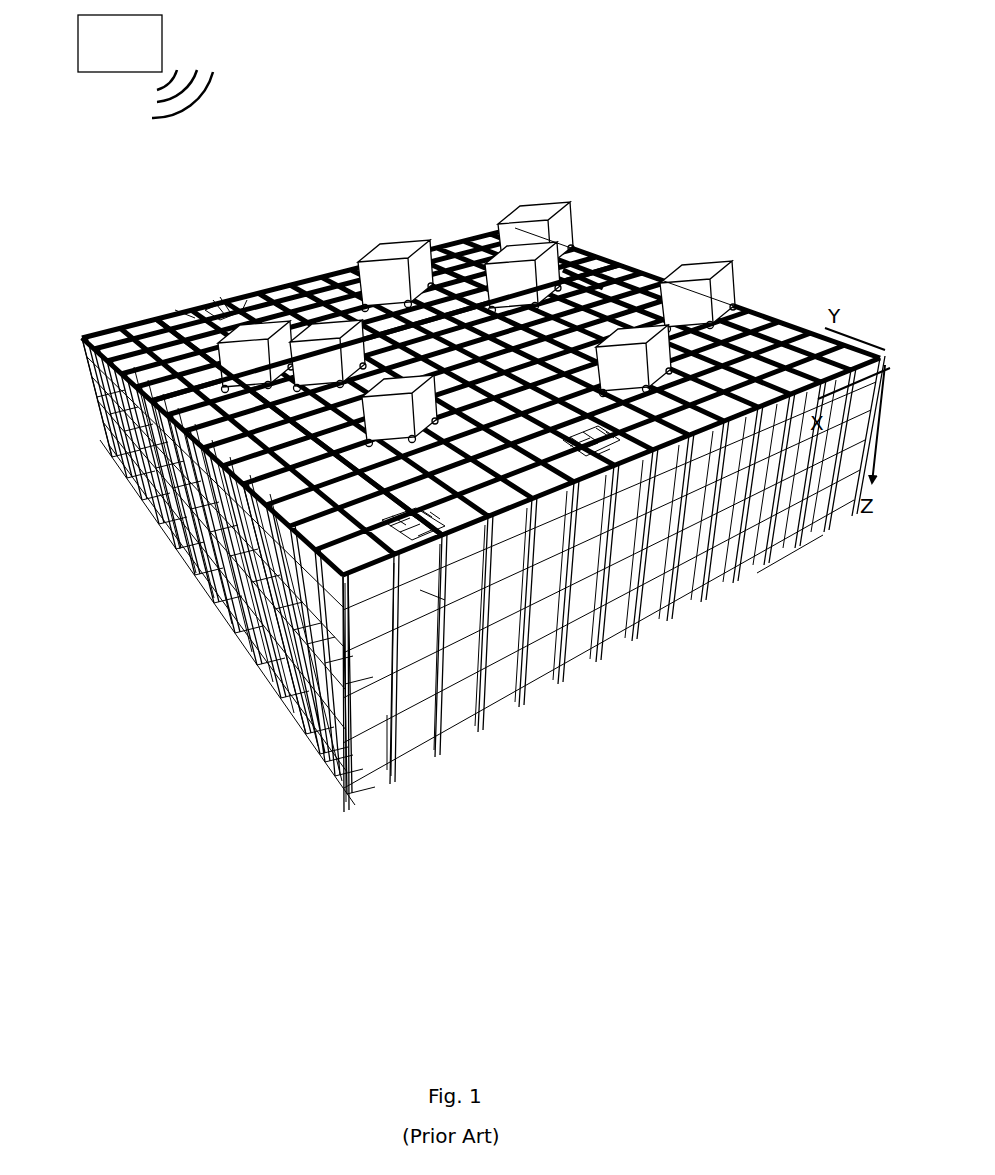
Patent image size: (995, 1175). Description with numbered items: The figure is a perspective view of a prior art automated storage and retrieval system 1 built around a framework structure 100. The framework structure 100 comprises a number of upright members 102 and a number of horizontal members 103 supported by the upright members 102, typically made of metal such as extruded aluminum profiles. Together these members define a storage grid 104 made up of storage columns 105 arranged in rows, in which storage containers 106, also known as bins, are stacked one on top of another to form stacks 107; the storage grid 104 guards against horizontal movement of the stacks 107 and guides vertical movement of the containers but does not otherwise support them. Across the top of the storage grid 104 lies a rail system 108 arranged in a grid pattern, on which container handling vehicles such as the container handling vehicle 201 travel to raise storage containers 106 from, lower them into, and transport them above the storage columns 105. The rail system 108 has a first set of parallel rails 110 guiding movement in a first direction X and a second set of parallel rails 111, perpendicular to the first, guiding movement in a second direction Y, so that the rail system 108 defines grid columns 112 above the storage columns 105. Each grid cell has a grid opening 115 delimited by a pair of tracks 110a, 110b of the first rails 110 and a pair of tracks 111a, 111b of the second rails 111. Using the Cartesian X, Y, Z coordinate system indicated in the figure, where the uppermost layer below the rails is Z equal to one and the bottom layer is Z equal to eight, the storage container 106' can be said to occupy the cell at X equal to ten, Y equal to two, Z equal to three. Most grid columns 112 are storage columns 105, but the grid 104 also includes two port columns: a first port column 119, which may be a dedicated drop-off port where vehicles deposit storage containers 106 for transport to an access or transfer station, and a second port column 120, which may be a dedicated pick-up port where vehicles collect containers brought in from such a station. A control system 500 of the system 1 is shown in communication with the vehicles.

The automated storage and retrieval system 1 is at (425, 137).
The framework structure 100 is at (98, 490).
The upright members 102 is at (337, 688).
The horizontal members 103 is at (680, 537).
The storage grid 104 is at (80, 365).
The storage columns 105 is at (257, 592).
The storage containers 106 is at (513, 805).
The storage container 106' is at (496, 697).
The stacks 107 is at (757, 573).
The rail system 108 is at (808, 330).
The first set of parallel rails 110 is at (755, 352).
The track of the first rails 110a is at (225, 315).
The track of the first rails 110b is at (232, 315).
The second set of parallel rails 111 is at (330, 285).
The track of the second rails 111a is at (195, 318).
The track of the second rails 111b is at (240, 315).
The grid columns 112 is at (750, 240).
The grid opening 115 is at (210, 315).
The first port column 119 is at (420, 590).
The second port column 120 is at (598, 450).
The container handling vehicle 201 is at (545, 218).
The control system 500 is at (145, 66).